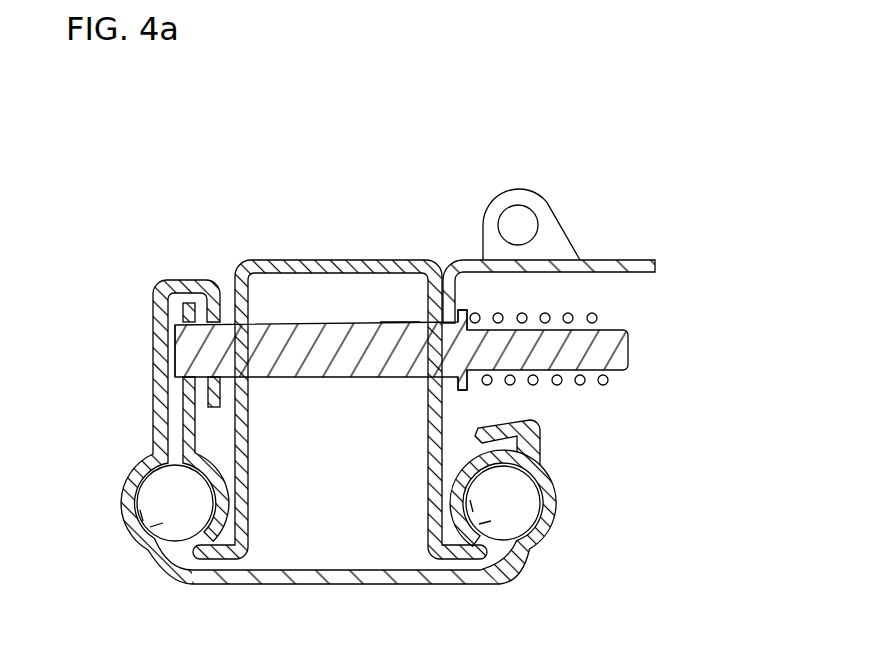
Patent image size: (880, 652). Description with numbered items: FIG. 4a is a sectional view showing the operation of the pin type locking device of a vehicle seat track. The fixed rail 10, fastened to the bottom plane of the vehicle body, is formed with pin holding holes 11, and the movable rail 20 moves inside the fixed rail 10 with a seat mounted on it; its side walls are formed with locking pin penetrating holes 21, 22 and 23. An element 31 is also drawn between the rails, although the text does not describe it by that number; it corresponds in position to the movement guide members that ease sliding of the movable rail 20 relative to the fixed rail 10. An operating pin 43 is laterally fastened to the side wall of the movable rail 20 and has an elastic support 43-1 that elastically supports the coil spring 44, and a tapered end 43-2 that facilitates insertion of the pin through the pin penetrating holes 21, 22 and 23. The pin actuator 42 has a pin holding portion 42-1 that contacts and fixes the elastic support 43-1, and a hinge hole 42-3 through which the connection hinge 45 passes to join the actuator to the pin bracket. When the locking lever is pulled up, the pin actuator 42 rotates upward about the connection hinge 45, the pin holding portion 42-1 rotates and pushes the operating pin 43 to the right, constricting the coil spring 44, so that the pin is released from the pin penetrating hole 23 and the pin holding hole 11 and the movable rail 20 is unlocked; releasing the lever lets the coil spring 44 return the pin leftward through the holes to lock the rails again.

The fixed rail 10 is at (512, 565).
The pin holding holes 11 is at (182, 305).
The movable rail 20 is at (320, 257).
The locking pin penetrating hole 21 is at (397, 322).
The locking pin penetrating hole 22 is at (200, 357).
The locking pin penetrating hole 23 is at (178, 325).
The ball 31 is at (163, 520).
The pin actuator 42 is at (452, 290).
The pin holding portion 42-1 is at (448, 302).
The hinge hole 42-3 is at (495, 205).
The operating pin 43 is at (597, 348).
The elastic support 43-1 is at (470, 388).
The tapered end 43-2 is at (200, 340).
The coil spring 44 is at (595, 315).
The connection hinge 45 is at (528, 222).